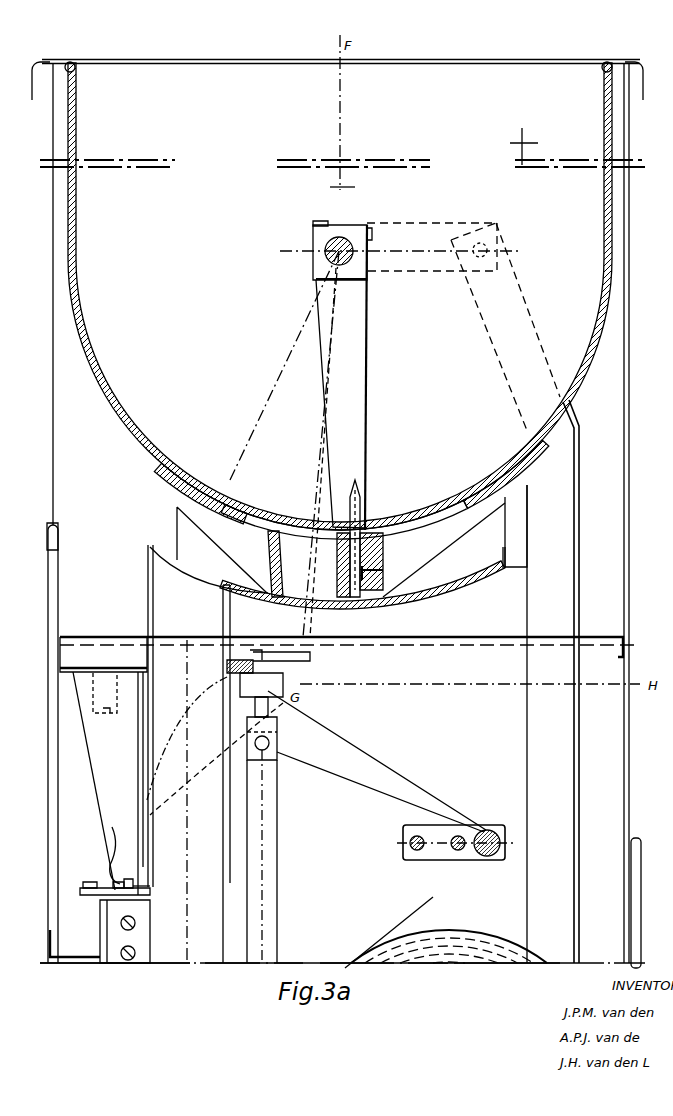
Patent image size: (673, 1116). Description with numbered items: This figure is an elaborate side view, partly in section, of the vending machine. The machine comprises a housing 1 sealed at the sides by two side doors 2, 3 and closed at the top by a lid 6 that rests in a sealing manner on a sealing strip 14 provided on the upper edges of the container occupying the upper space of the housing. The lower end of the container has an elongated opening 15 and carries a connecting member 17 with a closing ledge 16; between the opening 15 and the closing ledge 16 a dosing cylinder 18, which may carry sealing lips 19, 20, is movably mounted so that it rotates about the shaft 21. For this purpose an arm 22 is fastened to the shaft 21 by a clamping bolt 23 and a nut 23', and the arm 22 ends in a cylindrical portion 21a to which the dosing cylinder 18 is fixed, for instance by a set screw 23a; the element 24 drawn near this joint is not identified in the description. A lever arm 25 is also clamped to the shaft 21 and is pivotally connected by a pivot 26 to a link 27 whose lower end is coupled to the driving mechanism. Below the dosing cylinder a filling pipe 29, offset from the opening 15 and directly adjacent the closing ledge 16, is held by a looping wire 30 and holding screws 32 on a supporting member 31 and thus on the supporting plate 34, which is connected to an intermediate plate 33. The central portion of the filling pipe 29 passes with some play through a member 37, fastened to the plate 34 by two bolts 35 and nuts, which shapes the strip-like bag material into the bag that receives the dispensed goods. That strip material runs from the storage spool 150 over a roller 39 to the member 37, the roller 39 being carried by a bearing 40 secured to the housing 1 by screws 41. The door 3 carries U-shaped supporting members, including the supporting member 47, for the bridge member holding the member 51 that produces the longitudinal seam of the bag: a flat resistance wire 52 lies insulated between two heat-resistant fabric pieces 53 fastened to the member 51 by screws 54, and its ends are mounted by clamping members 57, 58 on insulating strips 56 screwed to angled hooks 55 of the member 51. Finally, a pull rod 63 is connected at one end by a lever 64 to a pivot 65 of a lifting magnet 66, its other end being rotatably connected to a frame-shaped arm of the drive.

The housing 1 is at (630, 457).
The side door 2 is at (642, 880).
The side door 3 is at (47, 848).
The lid 6 is at (440, 60).
The sealing strip 14 is at (606, 62).
The elongated opening 15 is at (438, 502).
The closing ledge 16 is at (458, 588).
The connecting member 17 is at (500, 550).
The dosing cylinder 18 is at (280, 563).
The sealing lip 19 is at (410, 520).
The sealing lip 20 is at (160, 478).
The shaft 21 is at (343, 240).
The cylindrical portion 21a is at (358, 505).
The arm 22 is at (322, 310).
The clamping bolt 23 is at (309, 252).
The nut 23' is at (304, 224).
The set screw 23a is at (380, 575).
The stop 24 is at (328, 282).
The lever arm 25 is at (432, 232).
The pivot 26 is at (485, 246).
The link 27 is at (580, 787).
The filling pipe 29 is at (147, 600).
The looping wire 30 is at (145, 645).
The supporting member 31 is at (256, 650).
The holding screws 32 is at (283, 690).
The intermediate plate 33 is at (374, 645).
The supporting plate 34 is at (72, 670).
The bolts 35 is at (108, 668).
The bag-forming member 37 is at (232, 795).
The roller 39 is at (491, 831).
The bearing 40 is at (438, 859).
The screws 41 is at (458, 838).
The supporting member 47 is at (66, 955).
The sealing member 51 is at (100, 935).
The flat resistance wire 52 is at (128, 878).
The heat resistant fabric pieces 53 is at (107, 892).
The screws 54 is at (134, 950).
The angled hooks 55 is at (92, 912).
The insulating strips 56 is at (112, 885).
The clamping member 57 is at (132, 890).
The clamping member 58 is at (118, 847).
The pull rod 63 is at (278, 880).
The lever 64 is at (278, 730).
The pivot 65 is at (270, 745).
The lifting magnet 66 is at (310, 652).
The storage spool 150 is at (540, 966).